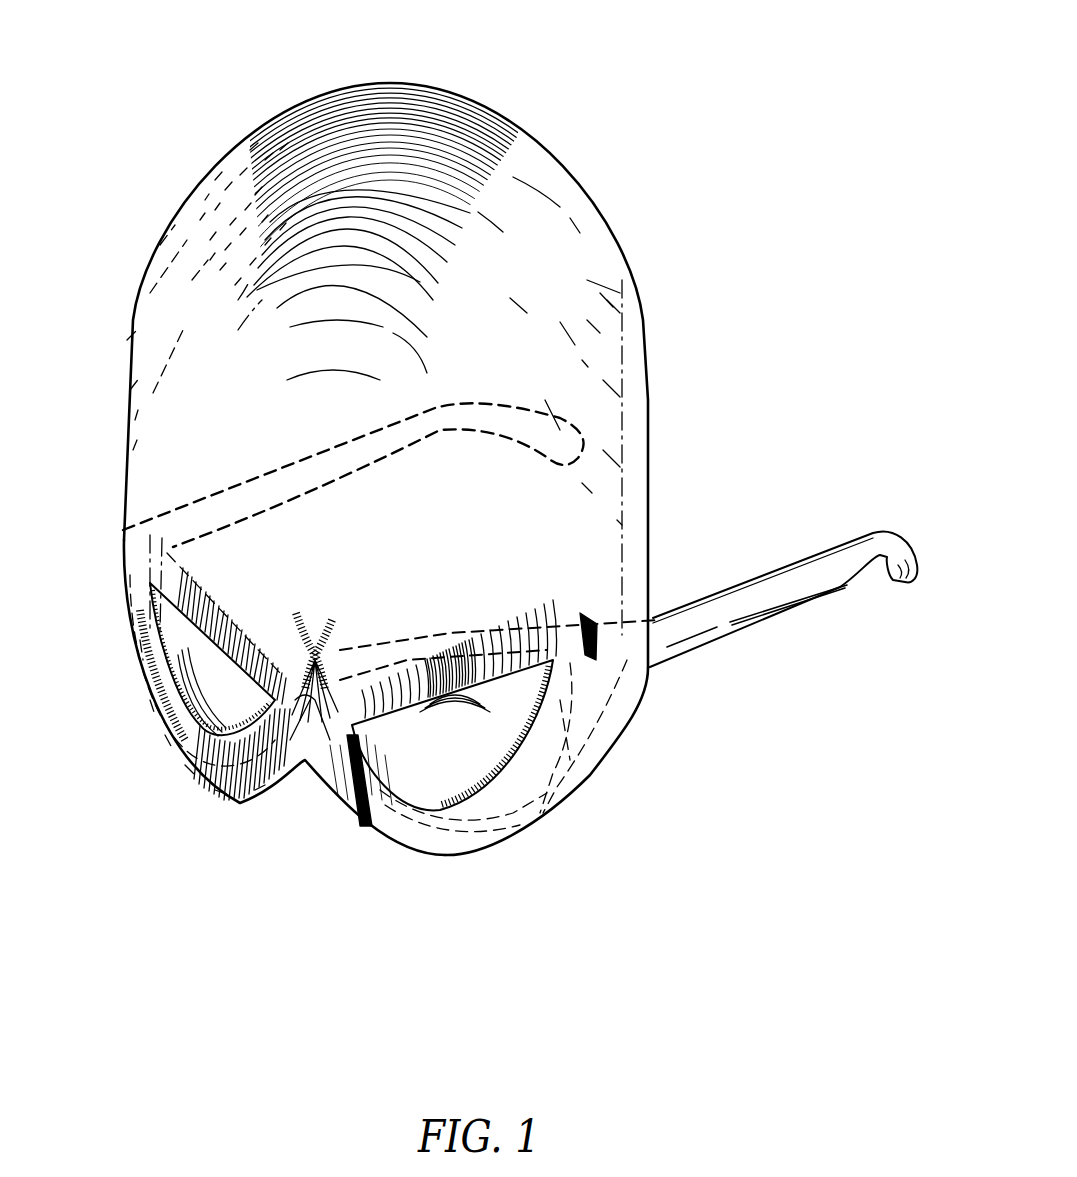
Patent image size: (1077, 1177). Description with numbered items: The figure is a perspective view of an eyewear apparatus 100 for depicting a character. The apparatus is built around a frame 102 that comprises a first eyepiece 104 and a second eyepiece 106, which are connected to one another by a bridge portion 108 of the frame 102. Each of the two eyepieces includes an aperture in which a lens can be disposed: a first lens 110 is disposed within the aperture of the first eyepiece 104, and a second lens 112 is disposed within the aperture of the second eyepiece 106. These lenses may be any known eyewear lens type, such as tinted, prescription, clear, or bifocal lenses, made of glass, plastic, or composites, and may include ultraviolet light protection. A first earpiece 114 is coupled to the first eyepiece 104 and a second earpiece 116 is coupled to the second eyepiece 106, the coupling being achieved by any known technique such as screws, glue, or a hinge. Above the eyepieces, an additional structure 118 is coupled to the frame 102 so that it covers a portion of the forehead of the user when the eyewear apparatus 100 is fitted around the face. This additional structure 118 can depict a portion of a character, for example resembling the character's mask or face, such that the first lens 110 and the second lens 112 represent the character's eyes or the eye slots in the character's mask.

The eyewear apparatus 100 is at (172, 50).
The frame 102 is at (340, 620).
The first eyepiece 104 is at (143, 648).
The second eyepiece 106 is at (590, 702).
The bridge portion 108 is at (323, 697).
The first lens 110 is at (250, 706).
The second lens 112 is at (453, 761).
The first earpiece 114 is at (570, 424).
The second earpiece 116 is at (835, 562).
The additional structure 118 is at (358, 361).